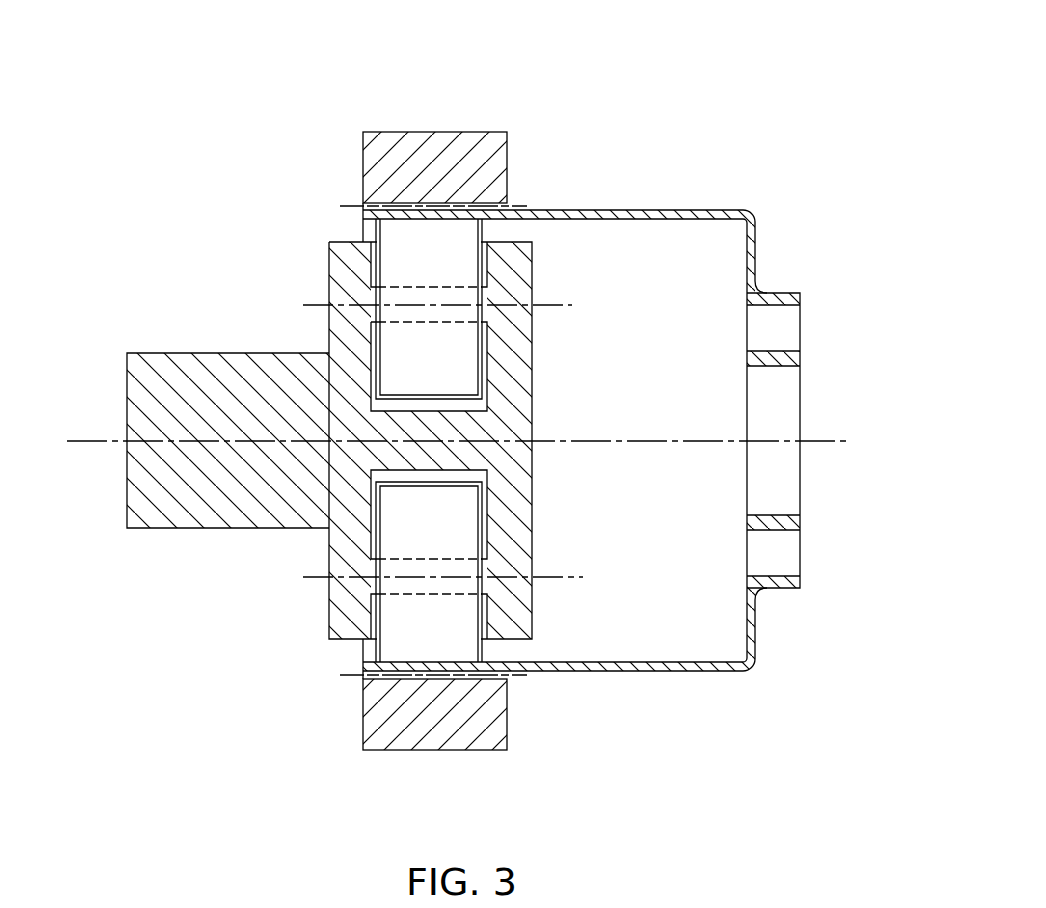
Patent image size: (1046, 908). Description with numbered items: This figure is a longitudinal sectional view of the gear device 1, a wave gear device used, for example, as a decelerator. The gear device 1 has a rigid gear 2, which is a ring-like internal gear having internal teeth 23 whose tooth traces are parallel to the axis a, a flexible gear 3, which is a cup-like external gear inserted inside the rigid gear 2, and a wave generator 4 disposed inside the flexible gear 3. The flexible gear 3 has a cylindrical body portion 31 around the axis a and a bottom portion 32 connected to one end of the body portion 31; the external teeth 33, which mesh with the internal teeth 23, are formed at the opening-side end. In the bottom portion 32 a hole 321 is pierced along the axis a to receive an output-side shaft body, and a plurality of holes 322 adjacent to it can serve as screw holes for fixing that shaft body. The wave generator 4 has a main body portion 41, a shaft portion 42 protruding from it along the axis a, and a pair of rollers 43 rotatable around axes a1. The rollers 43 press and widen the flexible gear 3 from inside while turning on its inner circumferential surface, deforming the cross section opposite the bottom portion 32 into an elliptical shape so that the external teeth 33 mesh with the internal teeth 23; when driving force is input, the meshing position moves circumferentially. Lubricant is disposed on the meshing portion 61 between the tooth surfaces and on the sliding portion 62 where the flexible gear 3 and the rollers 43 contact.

The gear device 1 is at (652, 60).
The rigid gear 2 is at (466, 403).
The internal teeth 23 is at (503, 218).
The flexible gear 3 is at (576, 438).
The body portion 31 is at (620, 672).
The bottom portion 32 is at (801, 410).
The hole 321 is at (767, 362).
The holes 322 is at (767, 303).
The external teeth 33 is at (390, 203).
The wave generator 4 is at (366, 440).
The main body portion 41 is at (533, 401).
The shaft portion 42 is at (212, 529).
The rollers 43 is at (484, 359).
The meshing portion 61 is at (444, 676).
The sliding portion 62 is at (428, 661).
The axis a is at (85, 446).
The axes a1 is at (572, 304).